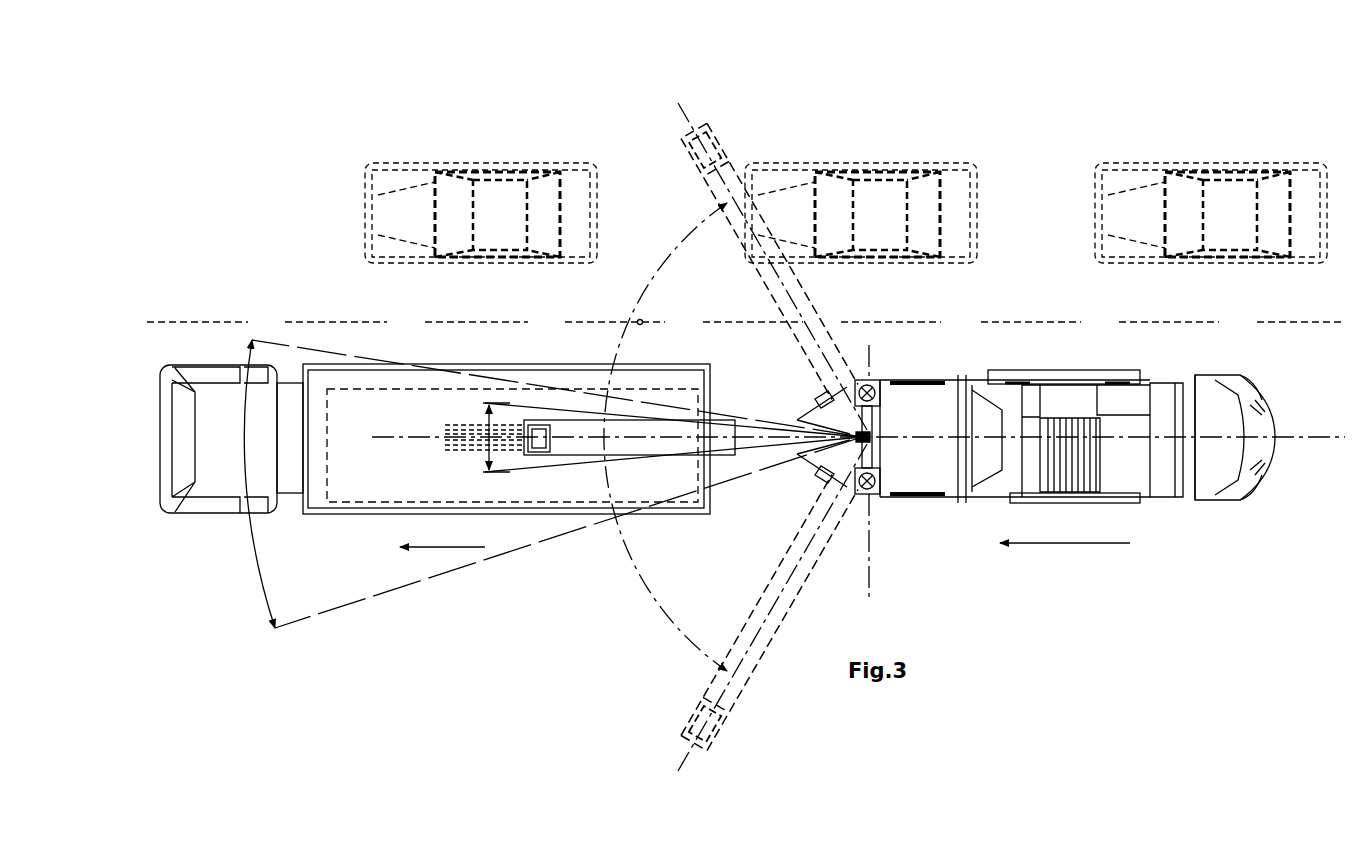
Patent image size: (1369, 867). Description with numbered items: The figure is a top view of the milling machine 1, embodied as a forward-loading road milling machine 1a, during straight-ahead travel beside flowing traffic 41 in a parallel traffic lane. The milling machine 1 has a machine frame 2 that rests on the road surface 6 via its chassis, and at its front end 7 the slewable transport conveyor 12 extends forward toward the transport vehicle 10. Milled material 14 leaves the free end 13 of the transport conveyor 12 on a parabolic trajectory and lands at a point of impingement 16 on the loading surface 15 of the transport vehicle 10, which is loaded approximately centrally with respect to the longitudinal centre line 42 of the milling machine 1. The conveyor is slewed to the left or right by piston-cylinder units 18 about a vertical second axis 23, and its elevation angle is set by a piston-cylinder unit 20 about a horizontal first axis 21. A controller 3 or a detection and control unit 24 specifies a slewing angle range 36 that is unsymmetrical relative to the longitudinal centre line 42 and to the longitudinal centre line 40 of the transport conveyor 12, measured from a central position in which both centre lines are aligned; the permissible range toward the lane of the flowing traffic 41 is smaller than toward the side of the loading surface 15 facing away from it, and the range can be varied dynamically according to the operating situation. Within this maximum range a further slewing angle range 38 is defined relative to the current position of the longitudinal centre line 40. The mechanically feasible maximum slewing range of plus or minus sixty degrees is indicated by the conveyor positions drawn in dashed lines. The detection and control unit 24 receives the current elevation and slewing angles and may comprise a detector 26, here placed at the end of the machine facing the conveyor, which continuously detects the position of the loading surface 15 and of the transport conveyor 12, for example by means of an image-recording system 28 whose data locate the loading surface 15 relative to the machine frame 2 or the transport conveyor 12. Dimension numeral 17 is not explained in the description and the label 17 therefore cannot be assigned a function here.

The milling machine 1 is at (1077, 406).
The forward-loading road milling machine 1a is at (941, 424).
The machine frame 2 is at (1033, 441).
The controller 3 is at (1030, 410).
The road surface 6 is at (800, 395).
The front end 7 is at (878, 350).
The transport vehicle 10 is at (370, 298).
The transport conveyor 12 is at (720, 423).
The free end 13 is at (548, 474).
The milled material 14 is at (483, 403).
The loading surface 15 is at (660, 495).
The point of impingement 16 is at (437, 438).
The field of view boundary 17 is at (372, 502).
The piston-cylinder units 18 is at (817, 390).
The piston-cylinder unit 20 is at (807, 431).
The horizontal first axis 21 is at (865, 303).
The vertical second axis 23 is at (880, 445).
The detection and control unit 24 is at (1030, 393).
The detector 26 is at (542, 425).
The image-recording system 28 is at (539, 438).
The slewing angle range 36 is at (250, 402).
The further slewing angle range 38 is at (476, 472).
The longitudinal centre line of the transport conveyor 40 is at (737, 445).
The flowing traffic 41 is at (950, 137).
The longitudinal centre line of the milling machine 42 is at (1305, 432).